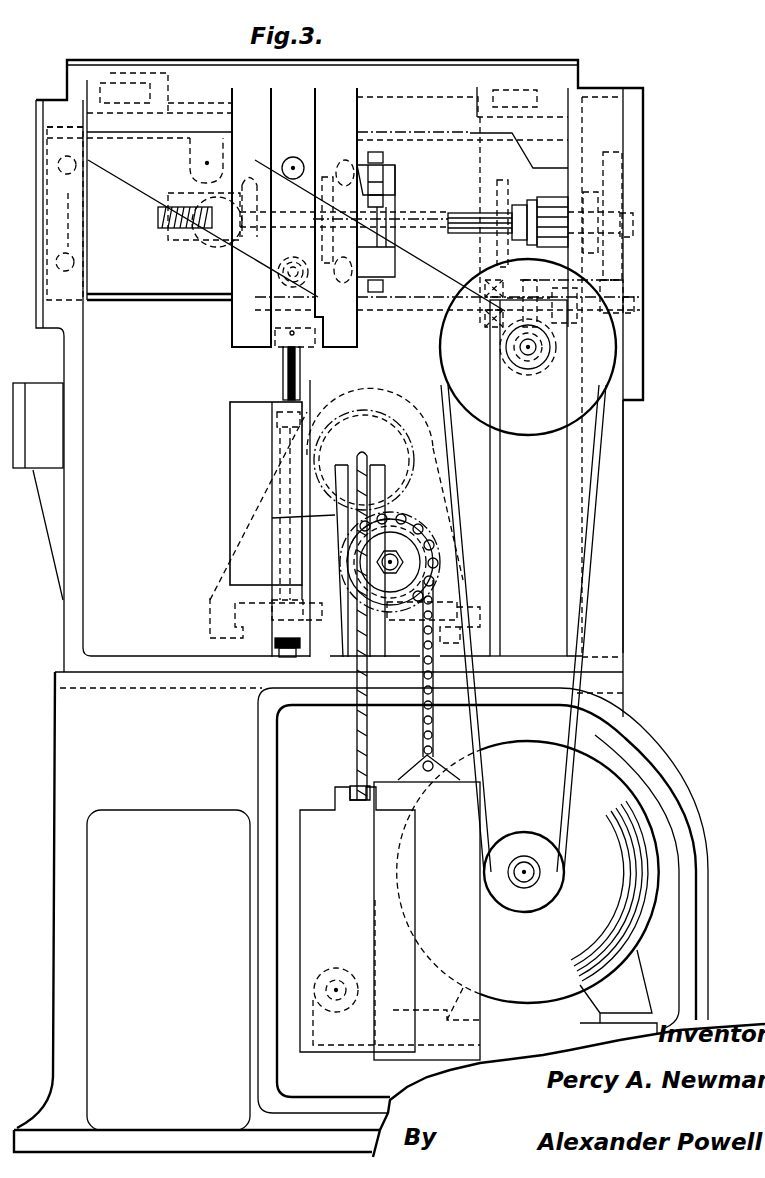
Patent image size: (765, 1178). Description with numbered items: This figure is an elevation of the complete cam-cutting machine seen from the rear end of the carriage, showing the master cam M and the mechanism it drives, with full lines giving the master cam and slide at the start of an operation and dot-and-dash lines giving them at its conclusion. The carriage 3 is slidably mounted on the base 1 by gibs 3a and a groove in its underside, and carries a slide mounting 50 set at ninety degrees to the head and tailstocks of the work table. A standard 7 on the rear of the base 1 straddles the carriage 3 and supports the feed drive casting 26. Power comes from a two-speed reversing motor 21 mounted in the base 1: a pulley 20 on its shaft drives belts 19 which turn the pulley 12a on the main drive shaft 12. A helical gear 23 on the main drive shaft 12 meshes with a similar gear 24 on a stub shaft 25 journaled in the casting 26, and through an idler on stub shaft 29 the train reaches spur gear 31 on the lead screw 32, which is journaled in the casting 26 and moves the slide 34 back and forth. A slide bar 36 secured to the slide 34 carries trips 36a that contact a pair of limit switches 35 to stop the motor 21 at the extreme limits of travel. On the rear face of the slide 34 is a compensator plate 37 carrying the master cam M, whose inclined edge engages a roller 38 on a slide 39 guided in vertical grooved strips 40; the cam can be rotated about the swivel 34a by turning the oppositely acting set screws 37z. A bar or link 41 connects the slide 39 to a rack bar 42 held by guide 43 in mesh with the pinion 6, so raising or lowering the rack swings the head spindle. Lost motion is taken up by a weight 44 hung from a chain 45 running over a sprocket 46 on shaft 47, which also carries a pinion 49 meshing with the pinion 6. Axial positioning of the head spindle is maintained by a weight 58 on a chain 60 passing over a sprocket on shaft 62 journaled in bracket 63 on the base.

The base 1 is at (389, 618).
The carriage 3 is at (470, 562).
The gibs 3a is at (512, 628).
The pinion 6 is at (377, 413).
The standard 7 is at (610, 558).
The main drive shaft 12 is at (512, 350).
The pulley 12a is at (597, 405).
The belts 19 is at (578, 724).
The pulley 20 is at (520, 836).
The two-speed reversing motor 21 is at (528, 872).
The helical gear 23 is at (172, 232).
The helical gear 24 is at (523, 283).
The stub shaft 25 is at (634, 306).
The feed drive casting 26 is at (588, 88).
The stub shaft 29 is at (618, 290).
The spur gear 31 is at (613, 173).
The lead screw 32 is at (182, 205).
The slide 34 is at (387, 178).
The swivel 34a is at (193, 243).
The limit switches 35 is at (165, 78).
The slide bar 36 is at (187, 100).
The trips 36a is at (104, 84).
The compensator plate 37 is at (380, 204).
The set screws 37z is at (378, 152).
The roller 38 is at (290, 262).
The slide 39 is at (258, 342).
The grooved strips 40 is at (333, 88).
The bar or link 41 is at (300, 380).
The rack bar 42 is at (272, 518).
The guide 43 is at (240, 452).
The weight 44 is at (407, 762).
The chain 45 is at (434, 724).
The sprocket 46 is at (413, 553).
The shaft 47 is at (407, 568).
The pinion 49 is at (410, 517).
The slide mounting 50 is at (258, 645).
The weight 58 is at (313, 813).
The chain 60 is at (365, 458).
The shaft 62 is at (333, 480).
The bracket 63 is at (287, 529).
The master cam M is at (296, 235).